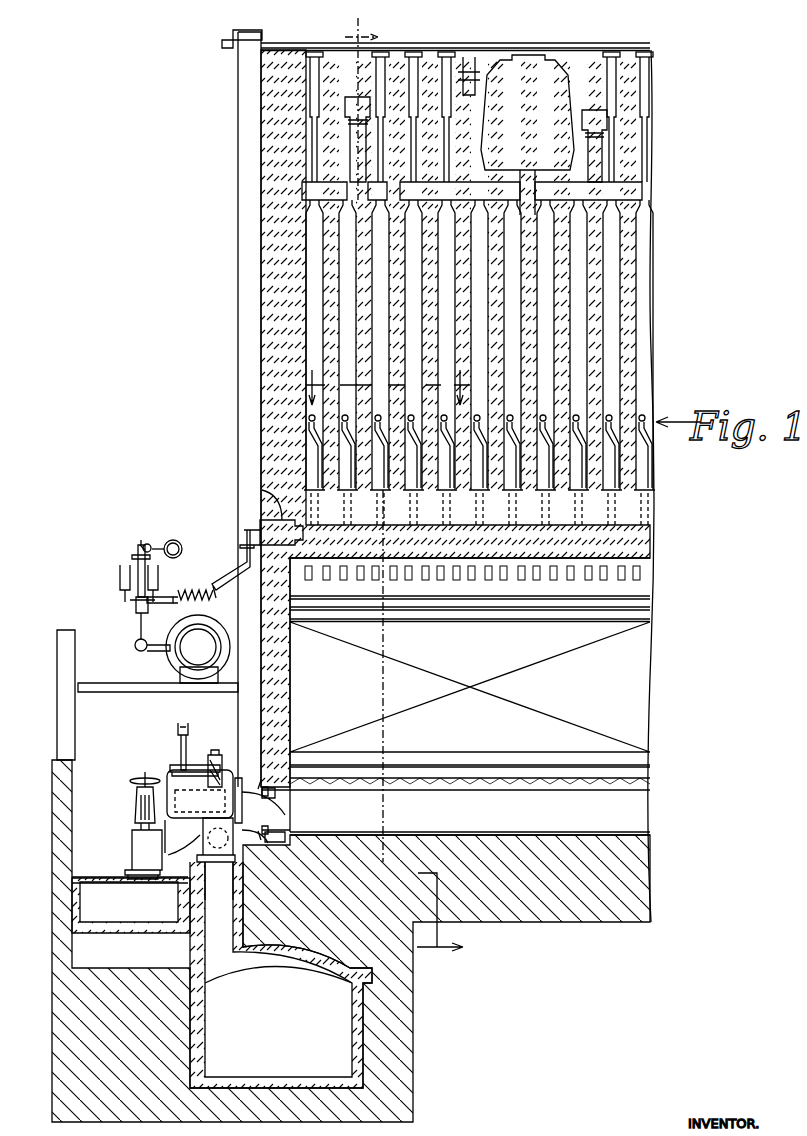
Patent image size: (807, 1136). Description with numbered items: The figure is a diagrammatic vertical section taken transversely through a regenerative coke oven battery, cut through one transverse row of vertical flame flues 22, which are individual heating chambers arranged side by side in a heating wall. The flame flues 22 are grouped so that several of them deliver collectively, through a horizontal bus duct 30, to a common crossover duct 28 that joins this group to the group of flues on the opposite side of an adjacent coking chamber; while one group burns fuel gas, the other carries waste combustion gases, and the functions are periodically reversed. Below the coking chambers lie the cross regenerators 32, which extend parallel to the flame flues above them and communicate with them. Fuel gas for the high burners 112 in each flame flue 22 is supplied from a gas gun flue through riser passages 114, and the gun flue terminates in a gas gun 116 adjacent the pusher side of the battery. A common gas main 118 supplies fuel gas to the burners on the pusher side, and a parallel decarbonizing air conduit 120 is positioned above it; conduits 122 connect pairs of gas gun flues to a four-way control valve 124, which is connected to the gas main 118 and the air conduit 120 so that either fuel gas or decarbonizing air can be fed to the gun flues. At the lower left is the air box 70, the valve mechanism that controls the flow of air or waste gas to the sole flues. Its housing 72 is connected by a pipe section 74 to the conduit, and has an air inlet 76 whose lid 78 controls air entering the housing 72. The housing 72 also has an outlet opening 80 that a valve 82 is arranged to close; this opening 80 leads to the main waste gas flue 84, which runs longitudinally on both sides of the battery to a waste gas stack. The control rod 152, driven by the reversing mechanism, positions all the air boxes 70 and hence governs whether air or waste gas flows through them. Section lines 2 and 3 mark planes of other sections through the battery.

The section line 2- 2 is at (399, 496).
The section line 3- 3 is at (394, 378).
The vertical flame flue 22 is at (680, 288).
The crossover duct 28 is at (470, 100).
The horizontal bus duct 30 is at (472, 191).
The cross regenerators 32 is at (670, 689).
The air box 70 is at (164, 752).
The housing 72 is at (200, 808).
The pipe section 74 is at (290, 812).
The air inlet 76 is at (166, 775).
The lid 78 is at (205, 770).
The outlet opening 80 is at (270, 842).
The valve 82 is at (240, 785).
The main waste gas flue 84 is at (292, 1033).
The high burners 112 is at (308, 417).
The riser passages 114 is at (134, 562).
The gas gun 116 is at (262, 518).
The gas main 118 is at (225, 610).
The decarbonizing air conduit 120 is at (176, 540).
The conduits 122 is at (240, 568).
The four-way control valve 124 is at (136, 606).
The control rod 152 is at (184, 723).